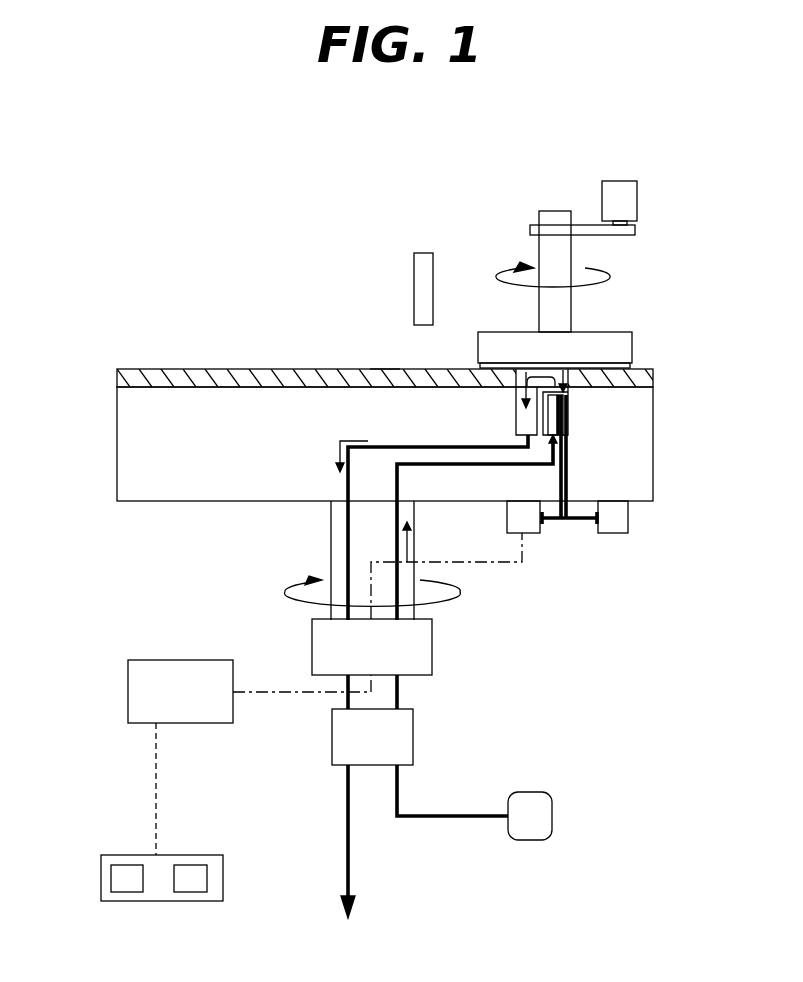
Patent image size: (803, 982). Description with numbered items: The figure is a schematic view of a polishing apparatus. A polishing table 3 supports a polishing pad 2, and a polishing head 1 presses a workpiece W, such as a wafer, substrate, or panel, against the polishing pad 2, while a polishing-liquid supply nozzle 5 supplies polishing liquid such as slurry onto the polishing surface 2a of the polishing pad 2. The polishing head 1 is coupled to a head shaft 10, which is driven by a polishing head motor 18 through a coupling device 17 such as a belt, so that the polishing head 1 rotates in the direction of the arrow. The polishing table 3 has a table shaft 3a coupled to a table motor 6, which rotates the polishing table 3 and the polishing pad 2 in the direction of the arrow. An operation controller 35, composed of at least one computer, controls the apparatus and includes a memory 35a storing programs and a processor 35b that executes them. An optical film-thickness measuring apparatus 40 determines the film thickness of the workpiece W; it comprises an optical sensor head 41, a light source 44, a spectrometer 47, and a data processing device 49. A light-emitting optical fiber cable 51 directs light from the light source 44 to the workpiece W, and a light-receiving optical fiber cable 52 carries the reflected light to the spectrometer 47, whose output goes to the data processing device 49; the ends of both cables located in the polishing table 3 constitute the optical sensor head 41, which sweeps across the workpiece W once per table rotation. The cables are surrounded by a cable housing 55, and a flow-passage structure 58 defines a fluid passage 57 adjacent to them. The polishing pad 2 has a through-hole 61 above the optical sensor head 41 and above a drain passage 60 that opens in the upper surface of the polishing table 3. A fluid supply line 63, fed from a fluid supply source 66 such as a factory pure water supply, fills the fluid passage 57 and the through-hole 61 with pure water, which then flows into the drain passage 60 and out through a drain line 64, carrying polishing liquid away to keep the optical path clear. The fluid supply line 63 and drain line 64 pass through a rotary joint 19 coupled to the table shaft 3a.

The polishing head 1 is at (612, 332).
The polishing pad 2 is at (360, 375).
The polishing surface 2a is at (383, 369).
The polishing table 3 is at (117, 460).
The table shaft 3a is at (331, 552).
The polishing-liquid supply nozzle 5 is at (415, 270).
The table motor 6 is at (432, 645).
The head shaft 10 is at (539, 256).
The coupling device 17 is at (589, 228).
The polishing head motor 18 is at (637, 205).
The rotary joint 19 is at (413, 727).
The operation controller 35 is at (160, 903).
The memory 35a is at (124, 893).
The processor 35b is at (190, 893).
The optical film-thickness measuring apparatus 40 is at (612, 551).
The optical sensor head 41 is at (563, 383).
The light source 44 is at (630, 518).
The spectrometer 47 is at (540, 533).
The data processing device 49 is at (186, 725).
The light-emitting optical fiber cable 51 is at (570, 481).
The light-receiving optical fiber cable 52 is at (567, 456).
The cable housing 55 is at (570, 412).
The fluid passage 57 is at (552, 415).
The flow-passage structure 58 is at (547, 422).
The drain passage 60 is at (520, 393).
The through-hole 61 is at (527, 378).
The fluid supply line 63 is at (398, 484).
The drain line 64 is at (348, 489).
The fluid supply source 66 is at (552, 815).
The workpiece W is at (612, 366).